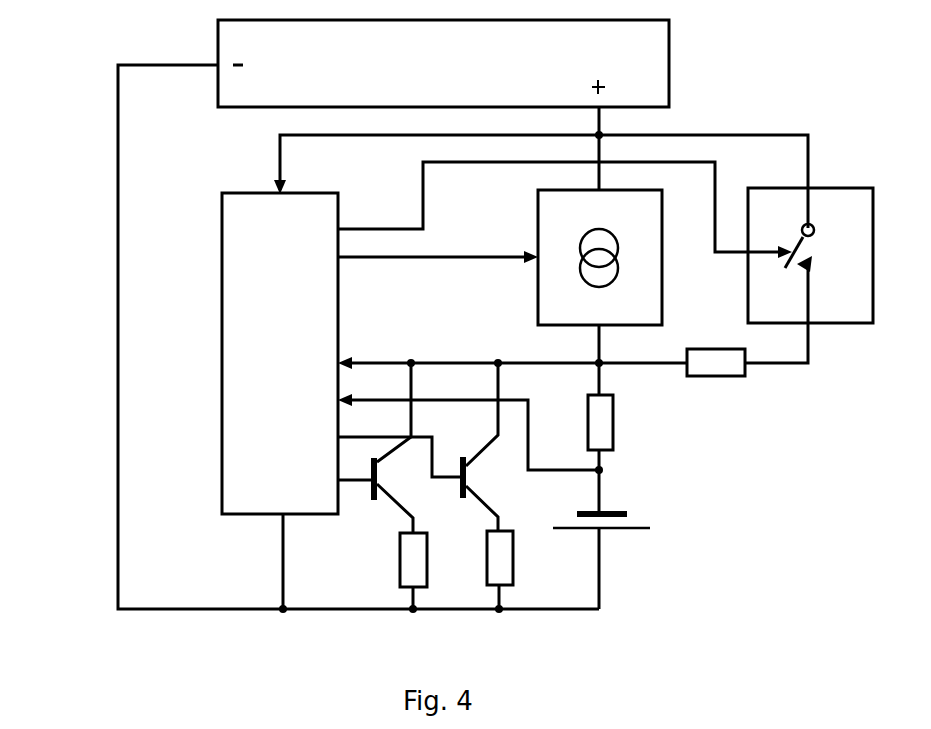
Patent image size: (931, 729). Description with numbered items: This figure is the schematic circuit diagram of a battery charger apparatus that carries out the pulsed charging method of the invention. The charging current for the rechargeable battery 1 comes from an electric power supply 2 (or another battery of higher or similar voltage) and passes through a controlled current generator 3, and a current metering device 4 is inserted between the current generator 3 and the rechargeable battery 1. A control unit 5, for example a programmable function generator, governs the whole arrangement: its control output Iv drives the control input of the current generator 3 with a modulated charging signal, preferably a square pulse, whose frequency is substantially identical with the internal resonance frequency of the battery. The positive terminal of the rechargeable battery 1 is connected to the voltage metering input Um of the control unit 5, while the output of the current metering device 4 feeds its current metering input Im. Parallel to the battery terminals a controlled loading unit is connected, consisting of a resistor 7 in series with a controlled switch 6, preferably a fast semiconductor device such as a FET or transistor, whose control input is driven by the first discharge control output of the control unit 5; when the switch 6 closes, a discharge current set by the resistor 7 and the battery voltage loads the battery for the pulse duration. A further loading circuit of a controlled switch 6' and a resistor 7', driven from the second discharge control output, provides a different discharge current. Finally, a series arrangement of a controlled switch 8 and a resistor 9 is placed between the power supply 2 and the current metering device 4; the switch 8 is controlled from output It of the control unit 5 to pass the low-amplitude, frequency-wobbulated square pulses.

The rechargeable battery 1 is at (633, 512).
The electric power supply 2 is at (669, 63).
The controlled current generator 3 is at (662, 237).
The current metering device 4 is at (613, 427).
The control unit 5 is at (247, 437).
The controlled switch 6 is at (377, 505).
The controlled switch 6' is at (499, 494).
The resistor 7 is at (373, 571).
The resistor 7' is at (530, 570).
The controlled switch 8 is at (848, 300).
The resistor 9 is at (728, 376).